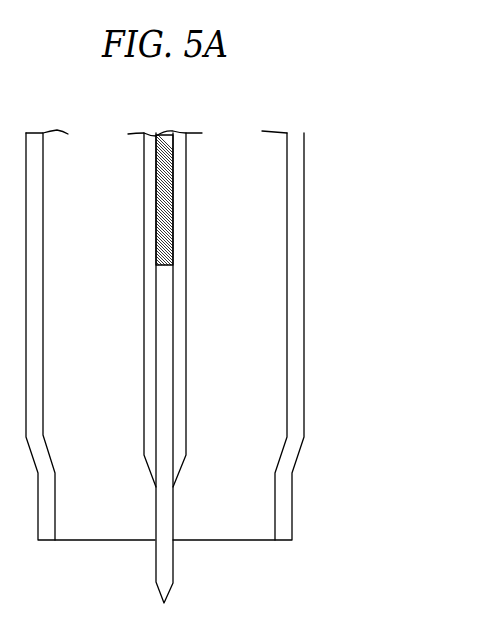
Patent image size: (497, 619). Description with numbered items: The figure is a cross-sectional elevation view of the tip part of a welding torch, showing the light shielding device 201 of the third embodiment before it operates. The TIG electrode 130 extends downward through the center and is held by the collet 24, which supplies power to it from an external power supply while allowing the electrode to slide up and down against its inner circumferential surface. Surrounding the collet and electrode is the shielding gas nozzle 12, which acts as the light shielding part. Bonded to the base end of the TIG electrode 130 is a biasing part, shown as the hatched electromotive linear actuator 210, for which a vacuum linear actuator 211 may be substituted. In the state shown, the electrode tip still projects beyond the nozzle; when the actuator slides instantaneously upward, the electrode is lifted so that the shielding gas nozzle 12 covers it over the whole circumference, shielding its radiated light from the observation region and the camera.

The light shielding device 201 is at (226, 341).
The shielding gas nozzle 12 is at (304, 392).
The collet 24 is at (144, 457).
The electromotive linear actuator 210 is at (283, 220).
The vacuum linear actuator 211 is at (173, 205).
The TIG electrode 130 is at (173, 565).